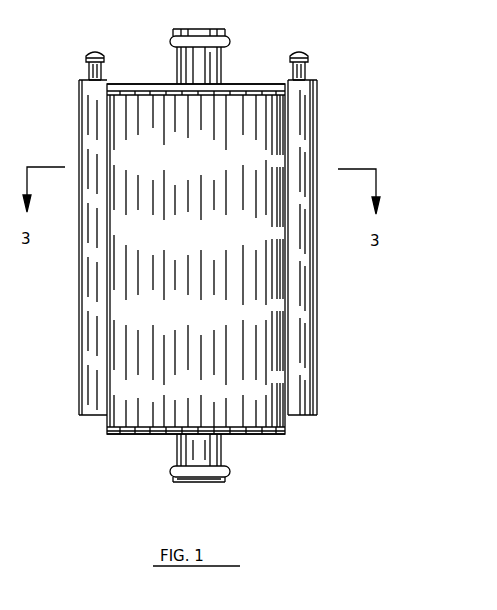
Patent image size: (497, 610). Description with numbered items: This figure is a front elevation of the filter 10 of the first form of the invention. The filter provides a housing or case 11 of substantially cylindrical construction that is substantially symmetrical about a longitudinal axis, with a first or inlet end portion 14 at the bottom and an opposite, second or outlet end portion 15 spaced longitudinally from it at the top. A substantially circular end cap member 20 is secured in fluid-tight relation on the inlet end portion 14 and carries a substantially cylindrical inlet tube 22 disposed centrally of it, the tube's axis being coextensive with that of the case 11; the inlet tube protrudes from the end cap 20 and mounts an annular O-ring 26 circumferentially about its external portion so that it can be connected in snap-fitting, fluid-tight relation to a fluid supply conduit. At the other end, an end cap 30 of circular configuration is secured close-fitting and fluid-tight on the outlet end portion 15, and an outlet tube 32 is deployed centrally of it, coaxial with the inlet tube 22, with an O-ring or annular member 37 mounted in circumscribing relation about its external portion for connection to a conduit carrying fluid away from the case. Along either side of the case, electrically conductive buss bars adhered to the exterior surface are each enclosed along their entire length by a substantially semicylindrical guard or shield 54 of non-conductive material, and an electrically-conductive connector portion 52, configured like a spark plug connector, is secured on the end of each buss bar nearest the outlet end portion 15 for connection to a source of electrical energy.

The filter 10 is at (345, 140).
The housing or case 11 is at (275, 327).
The inlet end portion 14 is at (258, 409).
The outlet end portion 15 is at (268, 135).
The end cap member 20 is at (143, 434).
The inlet tube 22 is at (215, 448).
The O-ring 26 is at (170, 471).
The end cap 30 is at (255, 84).
The outlet tube 32 is at (218, 60).
The O-ring or annular member 37 is at (176, 42).
The connector portion 52 is at (88, 55).
The guard or shield 54 is at (84, 262).